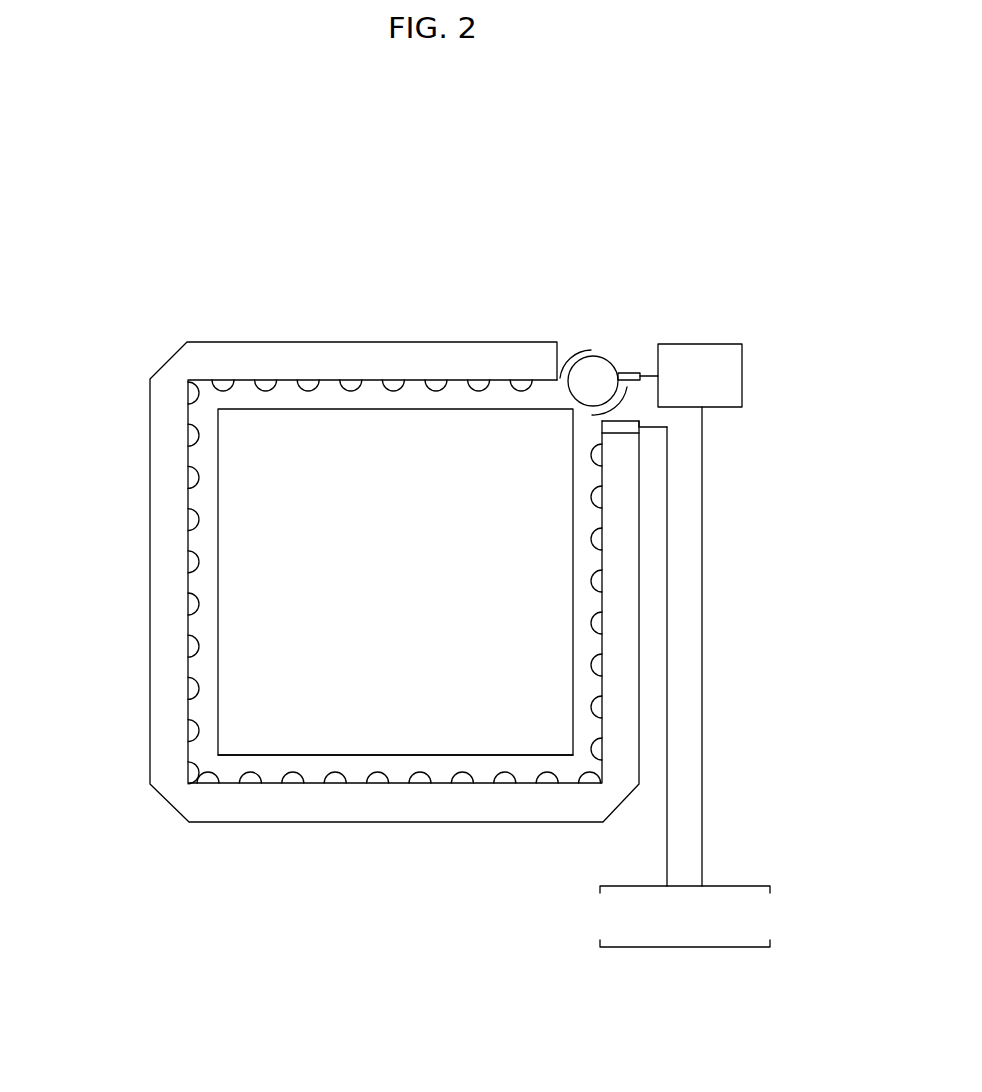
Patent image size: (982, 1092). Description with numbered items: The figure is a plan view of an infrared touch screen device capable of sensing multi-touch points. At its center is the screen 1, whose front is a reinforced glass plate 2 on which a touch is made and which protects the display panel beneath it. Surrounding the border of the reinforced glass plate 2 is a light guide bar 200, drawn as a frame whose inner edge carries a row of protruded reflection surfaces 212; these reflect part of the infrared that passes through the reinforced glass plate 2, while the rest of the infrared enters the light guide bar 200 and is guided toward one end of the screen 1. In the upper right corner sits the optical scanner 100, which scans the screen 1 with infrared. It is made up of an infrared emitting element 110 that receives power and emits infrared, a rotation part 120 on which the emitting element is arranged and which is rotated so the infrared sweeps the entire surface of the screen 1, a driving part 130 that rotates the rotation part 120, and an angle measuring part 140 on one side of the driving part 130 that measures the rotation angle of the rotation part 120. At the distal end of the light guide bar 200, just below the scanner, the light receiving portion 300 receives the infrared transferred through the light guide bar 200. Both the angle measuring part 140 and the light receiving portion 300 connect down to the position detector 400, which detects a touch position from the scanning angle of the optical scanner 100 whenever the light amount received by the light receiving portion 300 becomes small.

The screen 1 is at (443, 766).
The reinforced glass plate 2 is at (398, 755).
The optical scanner 100 is at (660, 272).
The infrared emitting element 110 is at (565, 395).
The rotation part 120 is at (603, 356).
The driving part 130 is at (622, 376).
The angle measuring part 140 is at (705, 344).
The light guide bar 200 is at (144, 522).
The reflection surface 212 is at (188, 606).
The light receiving portion 300 is at (620, 433).
The position detector 400 is at (741, 886).